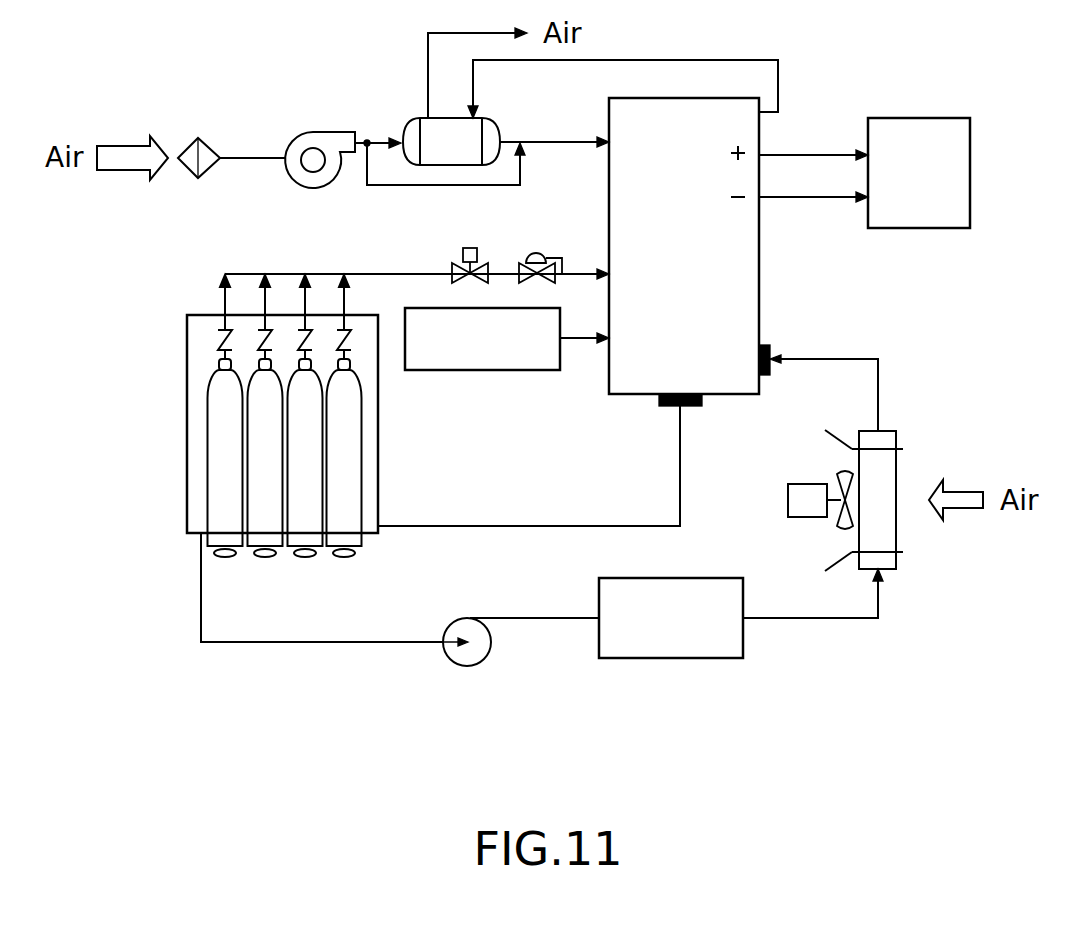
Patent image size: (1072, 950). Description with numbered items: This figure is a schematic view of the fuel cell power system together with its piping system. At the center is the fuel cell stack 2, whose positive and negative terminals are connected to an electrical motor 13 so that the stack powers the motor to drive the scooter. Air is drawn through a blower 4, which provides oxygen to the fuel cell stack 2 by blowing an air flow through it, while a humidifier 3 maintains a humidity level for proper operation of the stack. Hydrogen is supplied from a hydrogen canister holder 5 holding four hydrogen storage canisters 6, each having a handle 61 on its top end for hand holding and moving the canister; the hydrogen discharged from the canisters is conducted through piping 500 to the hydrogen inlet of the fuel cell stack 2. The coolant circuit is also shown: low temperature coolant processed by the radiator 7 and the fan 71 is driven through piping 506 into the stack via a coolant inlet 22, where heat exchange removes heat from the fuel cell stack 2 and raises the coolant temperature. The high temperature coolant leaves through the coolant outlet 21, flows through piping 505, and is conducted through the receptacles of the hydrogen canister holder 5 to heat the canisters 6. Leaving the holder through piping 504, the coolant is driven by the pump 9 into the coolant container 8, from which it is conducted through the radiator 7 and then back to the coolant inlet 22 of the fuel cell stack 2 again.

The fuel cell stack 2 is at (745, 277).
The humidifier 3 is at (528, 357).
The blower 4 is at (303, 136).
The hydrogen canister holder 5 is at (197, 362).
The hydrogen storage canister 6 is at (215, 405).
The handle 61 is at (228, 558).
The radiator 7 is at (888, 475).
The fan 71 is at (840, 530).
The coolant container 8 is at (678, 658).
The pump 9 is at (467, 660).
The electrical motor 13 is at (912, 128).
The coolant outlet 21 is at (688, 408).
The coolant inlet 22 is at (770, 374).
The piping 500 is at (362, 273).
The piping 504 is at (200, 597).
The piping 505 is at (458, 523).
The piping 506 is at (840, 356).